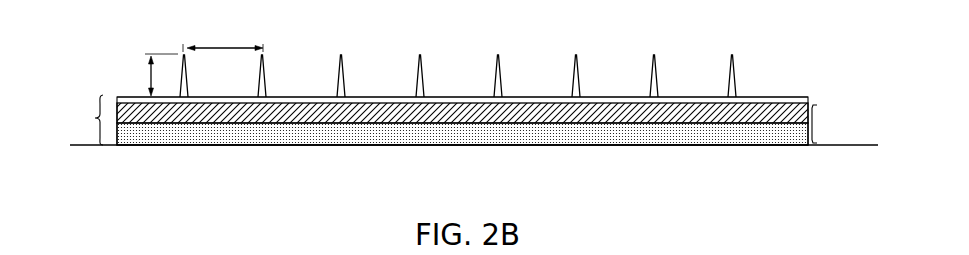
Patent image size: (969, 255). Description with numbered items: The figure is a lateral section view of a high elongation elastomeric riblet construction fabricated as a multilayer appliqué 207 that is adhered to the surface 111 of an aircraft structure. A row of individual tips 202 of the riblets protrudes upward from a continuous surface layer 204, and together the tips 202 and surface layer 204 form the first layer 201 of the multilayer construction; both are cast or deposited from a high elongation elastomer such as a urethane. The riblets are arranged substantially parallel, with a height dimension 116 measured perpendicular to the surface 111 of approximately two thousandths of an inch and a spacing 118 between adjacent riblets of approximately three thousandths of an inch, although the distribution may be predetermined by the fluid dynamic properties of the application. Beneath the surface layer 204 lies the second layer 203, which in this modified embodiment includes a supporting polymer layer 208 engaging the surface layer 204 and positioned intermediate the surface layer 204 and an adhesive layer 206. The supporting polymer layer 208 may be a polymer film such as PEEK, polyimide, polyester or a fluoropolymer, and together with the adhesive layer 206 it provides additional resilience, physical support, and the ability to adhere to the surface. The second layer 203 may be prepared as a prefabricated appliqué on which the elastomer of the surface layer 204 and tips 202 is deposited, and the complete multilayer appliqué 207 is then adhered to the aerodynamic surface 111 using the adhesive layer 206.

The surface 111 is at (113, 145).
The height dimension 116 is at (146, 78).
The spacing 118 is at (213, 47).
The first layer 201 is at (808, 102).
The tips 202 is at (425, 72).
The second layer 203 is at (818, 122).
The surface layer 204 is at (468, 97).
The adhesive layer 206 is at (790, 145).
The multilayer appliqué 207 is at (94, 118).
The supporting polymer layer 208 is at (626, 114).